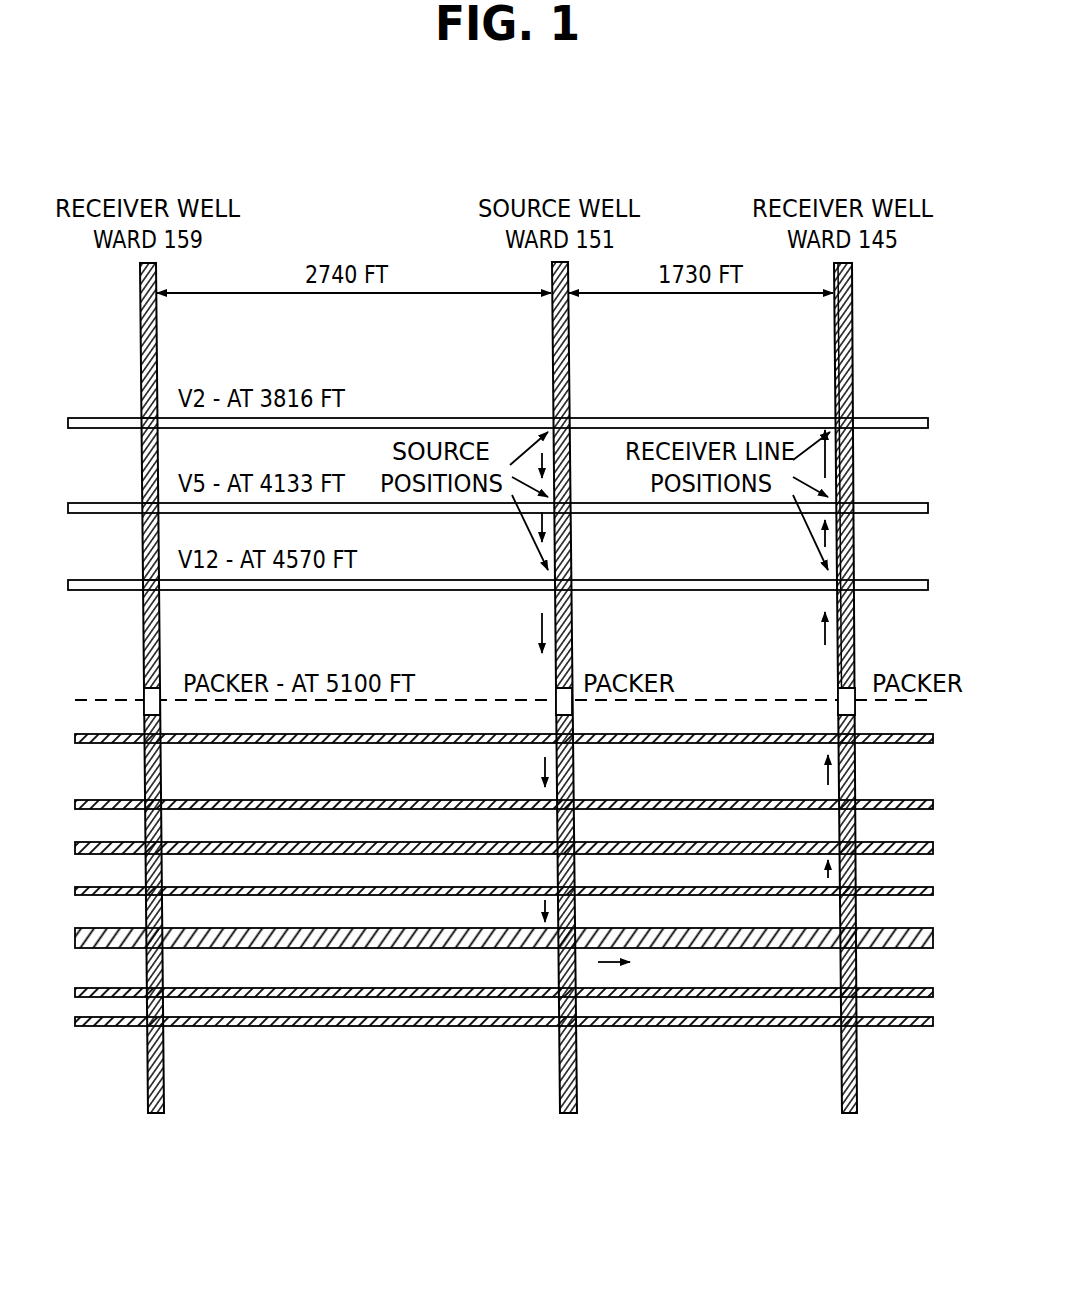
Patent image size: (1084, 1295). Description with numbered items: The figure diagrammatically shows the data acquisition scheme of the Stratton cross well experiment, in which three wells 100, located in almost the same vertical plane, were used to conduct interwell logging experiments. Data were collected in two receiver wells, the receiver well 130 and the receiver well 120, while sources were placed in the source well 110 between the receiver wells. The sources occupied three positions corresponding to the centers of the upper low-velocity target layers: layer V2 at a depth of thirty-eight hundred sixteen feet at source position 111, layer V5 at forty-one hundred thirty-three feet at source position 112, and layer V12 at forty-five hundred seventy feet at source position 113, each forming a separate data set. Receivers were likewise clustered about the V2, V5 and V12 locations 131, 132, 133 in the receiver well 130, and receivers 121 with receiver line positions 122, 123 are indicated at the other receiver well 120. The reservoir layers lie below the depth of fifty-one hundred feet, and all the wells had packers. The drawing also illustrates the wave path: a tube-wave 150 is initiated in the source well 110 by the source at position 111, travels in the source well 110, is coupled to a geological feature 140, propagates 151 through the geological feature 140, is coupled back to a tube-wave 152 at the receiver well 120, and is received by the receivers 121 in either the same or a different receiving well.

The three wells 100 is at (244, 1170).
The source well 110 is at (583, 190).
The source position at V2 111 is at (570, 415).
The source position at V5 112 is at (571, 500).
The source position at V12 113 is at (571, 583).
The receiver well 120 is at (840, 190).
The receivers 121 is at (853, 413).
The receiver line position at V5 122 is at (853, 497).
The receiver line position at V12 123 is at (853, 580).
The receiver well 130 is at (158, 190).
The receiver location at V2 131 is at (142, 415).
The receiver location at V5 132 is at (143, 503).
The receiver location at V12 133 is at (144, 583).
The geological feature 140 is at (675, 928).
The tube-wave 150 is at (540, 627).
The propagation 151 is at (755, 962).
The tube-wave 152 is at (825, 778).